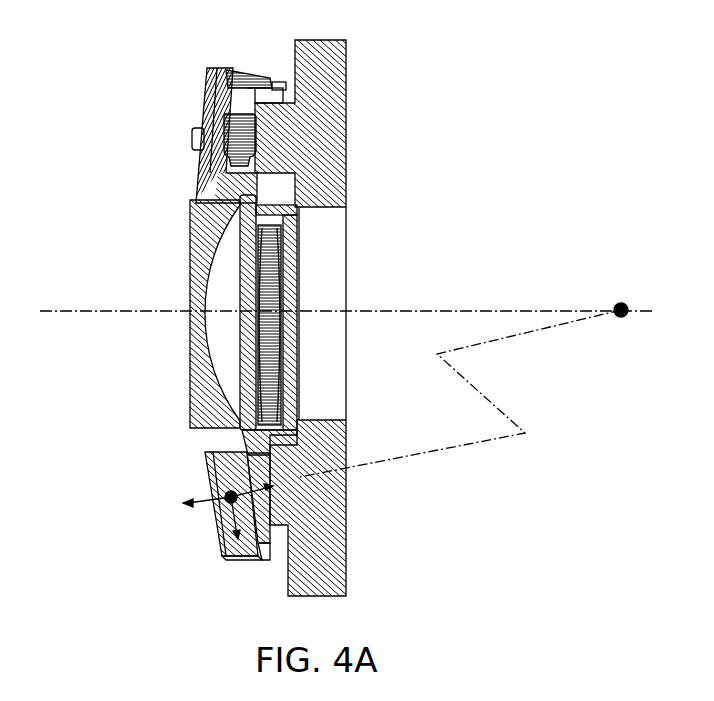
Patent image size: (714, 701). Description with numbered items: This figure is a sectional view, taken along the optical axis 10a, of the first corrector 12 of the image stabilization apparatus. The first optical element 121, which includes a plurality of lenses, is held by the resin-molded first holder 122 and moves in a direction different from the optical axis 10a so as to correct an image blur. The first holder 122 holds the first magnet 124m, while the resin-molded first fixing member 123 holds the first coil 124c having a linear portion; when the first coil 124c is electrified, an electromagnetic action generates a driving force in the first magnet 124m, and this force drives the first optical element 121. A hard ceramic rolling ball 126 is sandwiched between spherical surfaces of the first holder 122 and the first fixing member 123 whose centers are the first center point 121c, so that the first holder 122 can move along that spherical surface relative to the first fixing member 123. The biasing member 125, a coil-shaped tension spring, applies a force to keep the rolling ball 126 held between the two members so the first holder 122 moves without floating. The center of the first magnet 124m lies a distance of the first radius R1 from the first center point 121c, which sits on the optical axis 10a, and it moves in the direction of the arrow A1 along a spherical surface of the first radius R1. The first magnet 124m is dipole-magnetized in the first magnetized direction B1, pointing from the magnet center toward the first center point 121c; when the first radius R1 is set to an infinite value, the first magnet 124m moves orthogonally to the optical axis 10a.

The first corrector 12 is at (613, 53).
The first fixing member 123 is at (347, 80).
The first optical element 121 is at (188, 265).
The first holder 122 is at (193, 181).
The biasing member 125 is at (243, 68).
The rolling ball 126 is at (203, 126).
The optical axis 10a is at (110, 310).
The first radius R1 is at (456, 447).
The first center point 121c is at (619, 304).
The first magnet 124m is at (207, 483).
The first magnetized direction B1 is at (179, 506).
The arrow A1 is at (213, 532).
The first coil 124c is at (264, 536).